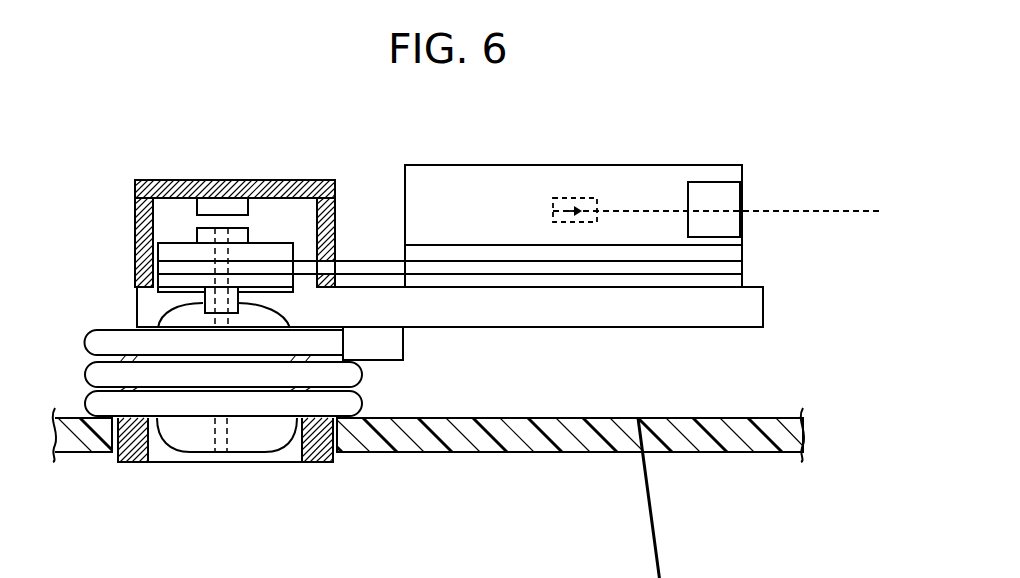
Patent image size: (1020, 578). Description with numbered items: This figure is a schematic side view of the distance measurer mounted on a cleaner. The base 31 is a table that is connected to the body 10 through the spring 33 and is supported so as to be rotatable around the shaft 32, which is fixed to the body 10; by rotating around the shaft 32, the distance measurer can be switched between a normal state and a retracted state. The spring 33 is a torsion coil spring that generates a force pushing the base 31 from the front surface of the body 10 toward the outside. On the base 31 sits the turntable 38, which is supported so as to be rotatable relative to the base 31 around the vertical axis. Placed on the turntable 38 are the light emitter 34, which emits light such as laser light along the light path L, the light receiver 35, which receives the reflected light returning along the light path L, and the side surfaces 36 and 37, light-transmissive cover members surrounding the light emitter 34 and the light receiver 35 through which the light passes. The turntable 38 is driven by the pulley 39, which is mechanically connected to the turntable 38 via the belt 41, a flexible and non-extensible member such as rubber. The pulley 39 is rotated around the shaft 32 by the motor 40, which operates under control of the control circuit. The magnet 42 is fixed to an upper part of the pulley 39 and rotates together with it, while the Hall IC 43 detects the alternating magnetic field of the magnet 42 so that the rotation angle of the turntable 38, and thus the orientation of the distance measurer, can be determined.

The body 10 is at (715, 442).
The base 31 is at (688, 317).
The shaft 32 is at (222, 462).
The spring 33 is at (97, 342).
The light emitter 34 is at (557, 197).
The light receiver 35 is at (585, 198).
The side surface 36 is at (717, 198).
The side surface 37 is at (492, 195).
The turntable 38 is at (730, 252).
The pulley 39 is at (173, 255).
The motor 40 is at (263, 437).
The belt 41 is at (358, 265).
The magnet 42 is at (203, 233).
The Hall IC 43 is at (228, 205).
The light path L is at (827, 211).